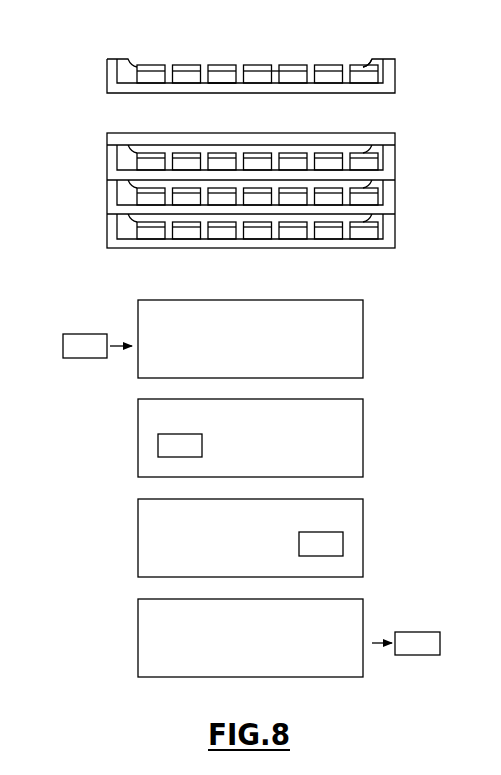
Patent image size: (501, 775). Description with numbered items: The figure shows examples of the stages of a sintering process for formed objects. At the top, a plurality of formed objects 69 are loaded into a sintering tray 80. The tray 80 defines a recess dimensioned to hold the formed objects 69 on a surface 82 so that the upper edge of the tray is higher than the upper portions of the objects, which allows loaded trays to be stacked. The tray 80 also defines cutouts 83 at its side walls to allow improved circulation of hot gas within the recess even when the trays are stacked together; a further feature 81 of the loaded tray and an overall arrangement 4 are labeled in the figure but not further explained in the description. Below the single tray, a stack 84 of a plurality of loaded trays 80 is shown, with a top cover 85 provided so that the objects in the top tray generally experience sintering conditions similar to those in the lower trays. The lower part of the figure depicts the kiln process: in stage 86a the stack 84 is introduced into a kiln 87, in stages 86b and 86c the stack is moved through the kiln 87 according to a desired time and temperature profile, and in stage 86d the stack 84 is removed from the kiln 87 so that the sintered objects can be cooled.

The system 4 is at (54, 202).
The formed objects 69 is at (178, 67).
The sintering tray 80 is at (107, 78).
The cell receiving area 81 is at (204, 62).
The surface 82 is at (275, 70).
The cutout 83 is at (345, 66).
The stack 84 is at (107, 195).
The top cover 85 is at (346, 134).
The stage 86a is at (388, 336).
The stage 86b is at (388, 436).
The stage 86c is at (388, 537).
The stage 86d is at (406, 609).
The kiln 87 is at (210, 300).